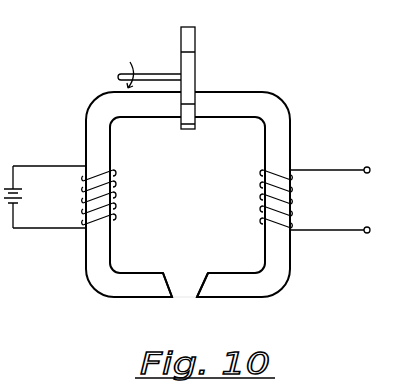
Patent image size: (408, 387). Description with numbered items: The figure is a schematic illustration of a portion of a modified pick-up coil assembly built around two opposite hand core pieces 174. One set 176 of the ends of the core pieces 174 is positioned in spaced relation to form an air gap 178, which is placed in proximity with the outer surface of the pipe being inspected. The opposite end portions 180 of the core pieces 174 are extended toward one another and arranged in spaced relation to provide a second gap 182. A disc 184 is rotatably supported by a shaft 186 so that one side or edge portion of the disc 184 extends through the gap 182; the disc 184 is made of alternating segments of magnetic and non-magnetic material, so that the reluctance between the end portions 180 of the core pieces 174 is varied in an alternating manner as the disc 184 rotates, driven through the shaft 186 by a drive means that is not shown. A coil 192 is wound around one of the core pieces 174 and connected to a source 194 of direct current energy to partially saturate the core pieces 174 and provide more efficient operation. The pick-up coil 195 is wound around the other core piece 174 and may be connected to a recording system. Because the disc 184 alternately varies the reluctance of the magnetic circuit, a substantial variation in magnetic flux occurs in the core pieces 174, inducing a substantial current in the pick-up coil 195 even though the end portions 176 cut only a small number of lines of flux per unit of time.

The core pieces 174 is at (88, 255).
The set of ends of the core pieces 176 is at (208, 278).
The air gap 178 is at (183, 290).
The opposite end portions of the core pieces 180 is at (223, 108).
The second gap 182 is at (200, 91).
The disc 184 is at (190, 43).
The shaft 186 is at (158, 73).
The coil 192 is at (113, 195).
The source of direct current energy 194 is at (5, 185).
The pick-up coil 195 is at (263, 198).